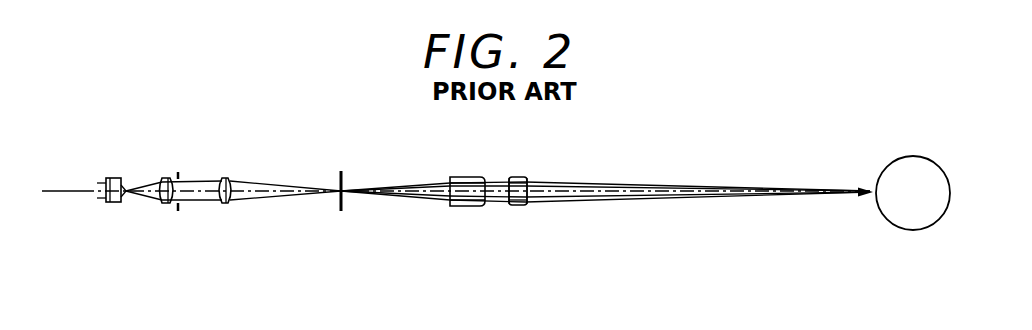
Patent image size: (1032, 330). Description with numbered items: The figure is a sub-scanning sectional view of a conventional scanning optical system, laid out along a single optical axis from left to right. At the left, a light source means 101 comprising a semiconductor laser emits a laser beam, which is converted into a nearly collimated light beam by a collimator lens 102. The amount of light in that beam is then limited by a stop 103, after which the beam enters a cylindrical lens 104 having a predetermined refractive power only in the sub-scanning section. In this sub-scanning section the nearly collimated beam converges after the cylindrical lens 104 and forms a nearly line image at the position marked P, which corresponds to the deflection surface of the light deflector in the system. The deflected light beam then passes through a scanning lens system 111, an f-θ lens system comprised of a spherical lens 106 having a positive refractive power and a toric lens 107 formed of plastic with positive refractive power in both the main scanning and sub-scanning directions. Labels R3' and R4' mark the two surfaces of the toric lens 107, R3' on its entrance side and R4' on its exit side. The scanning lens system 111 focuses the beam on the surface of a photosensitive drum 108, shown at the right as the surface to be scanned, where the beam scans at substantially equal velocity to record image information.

The light source means 101 is at (110, 204).
The collimator lens 102 is at (165, 205).
The stop 103 is at (180, 212).
The cylindrical lens 104 is at (226, 205).
The pinhole plate P is at (339, 213).
The spherical lens 106 is at (460, 208).
The toric lens 107 is at (518, 207).
The lens surface R3' is at (488, 167).
The lens surface R4' is at (551, 167).
The scanning lens system 111 is at (543, 278).
The photosensitive drum 108 is at (890, 221).